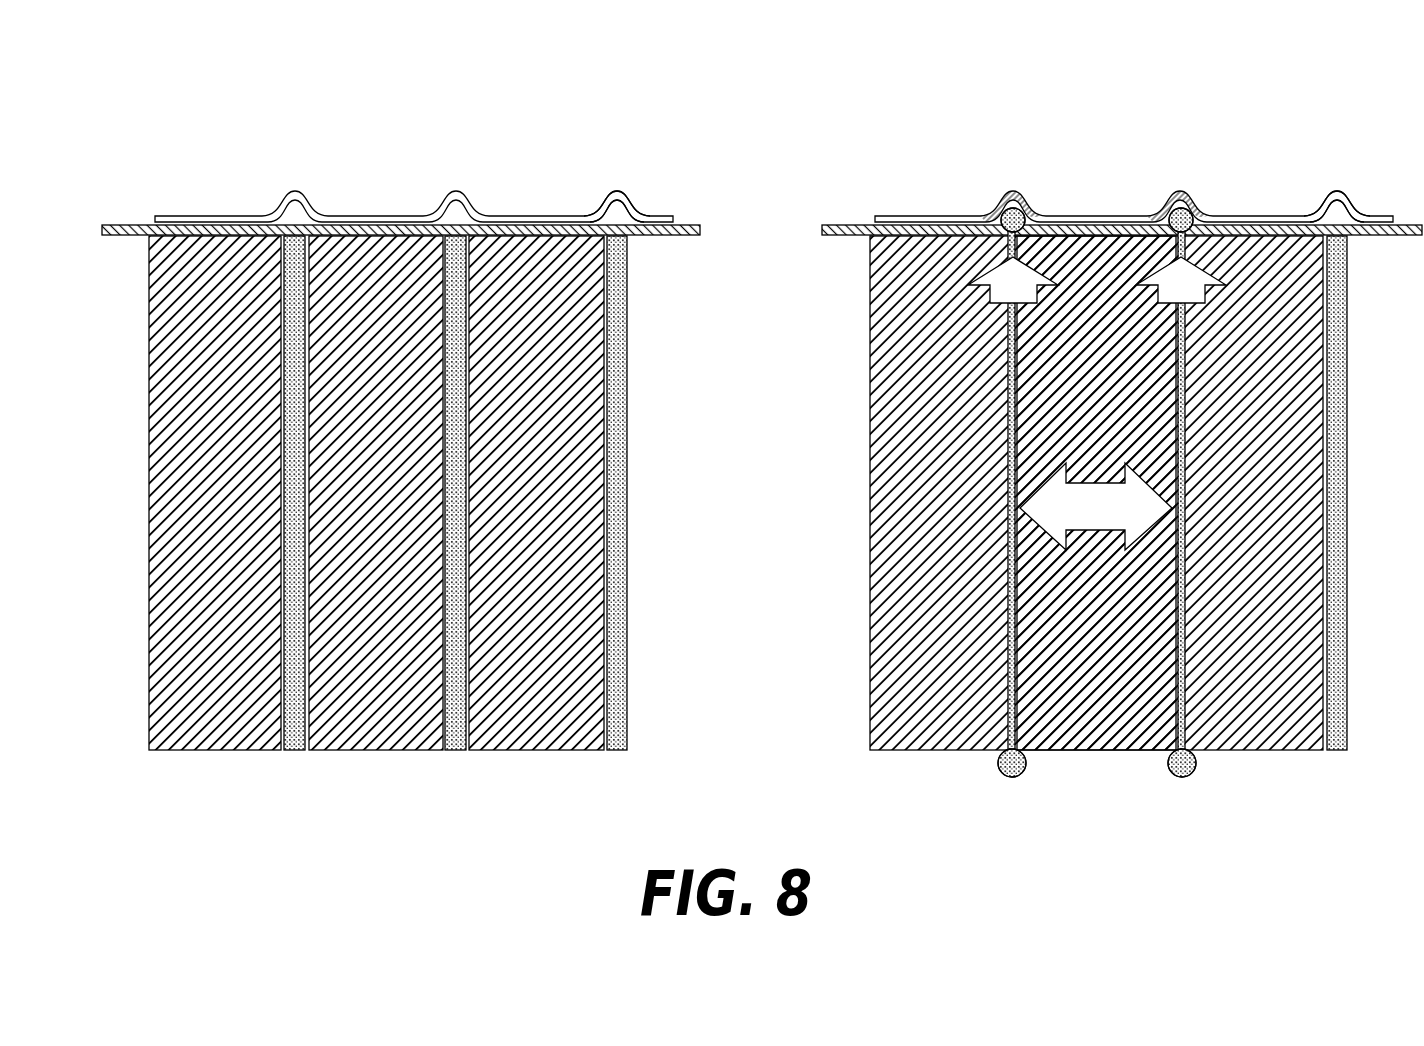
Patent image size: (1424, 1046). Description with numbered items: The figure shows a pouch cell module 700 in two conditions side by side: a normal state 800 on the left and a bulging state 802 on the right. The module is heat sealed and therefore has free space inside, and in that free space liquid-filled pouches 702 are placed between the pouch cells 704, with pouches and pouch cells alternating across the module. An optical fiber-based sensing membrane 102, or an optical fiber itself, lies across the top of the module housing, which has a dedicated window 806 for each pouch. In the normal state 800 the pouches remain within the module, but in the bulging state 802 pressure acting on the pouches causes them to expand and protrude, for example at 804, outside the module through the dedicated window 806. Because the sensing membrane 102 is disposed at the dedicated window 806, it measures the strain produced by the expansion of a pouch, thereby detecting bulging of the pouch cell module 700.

The pouch cell module 700 is at (748, 376).
The optical fiber-based sensing membrane 102 is at (112, 225).
The normal state 800 is at (397, 150).
The bulging state 802 is at (1072, 150).
The pouch 702 is at (459, 250).
The pouch cell 704 is at (541, 285).
The dedicated window 806 is at (618, 218).
The protrusion of pouch 804 is at (1014, 224).